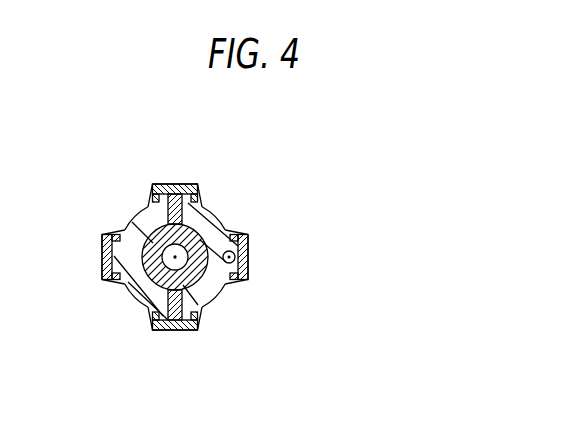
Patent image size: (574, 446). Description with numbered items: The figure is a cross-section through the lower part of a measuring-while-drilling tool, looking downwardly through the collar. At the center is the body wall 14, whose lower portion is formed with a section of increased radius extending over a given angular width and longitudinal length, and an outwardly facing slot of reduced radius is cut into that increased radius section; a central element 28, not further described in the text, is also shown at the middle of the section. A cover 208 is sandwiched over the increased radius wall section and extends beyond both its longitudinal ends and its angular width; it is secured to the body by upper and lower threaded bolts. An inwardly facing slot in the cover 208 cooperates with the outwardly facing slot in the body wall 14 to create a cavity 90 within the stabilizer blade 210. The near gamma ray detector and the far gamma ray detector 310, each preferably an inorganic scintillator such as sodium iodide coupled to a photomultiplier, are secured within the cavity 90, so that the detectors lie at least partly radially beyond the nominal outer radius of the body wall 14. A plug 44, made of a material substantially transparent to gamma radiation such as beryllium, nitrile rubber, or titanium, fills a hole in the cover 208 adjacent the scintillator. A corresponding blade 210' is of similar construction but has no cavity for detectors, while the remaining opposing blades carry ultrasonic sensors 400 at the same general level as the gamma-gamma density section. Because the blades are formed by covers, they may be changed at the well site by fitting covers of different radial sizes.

The body wall 14 is at (142, 220).
The central hub 28 is at (196, 233).
The plug 44 is at (237, 254).
The cavity 90 is at (235, 243).
The cover 208 is at (243, 244).
The stabilizer blade 210 is at (279, 252).
The stabilizer blade 210' is at (74, 271).
The far gamma ray detector 310 is at (238, 282).
The ultrasonic sensor 400 is at (158, 165).